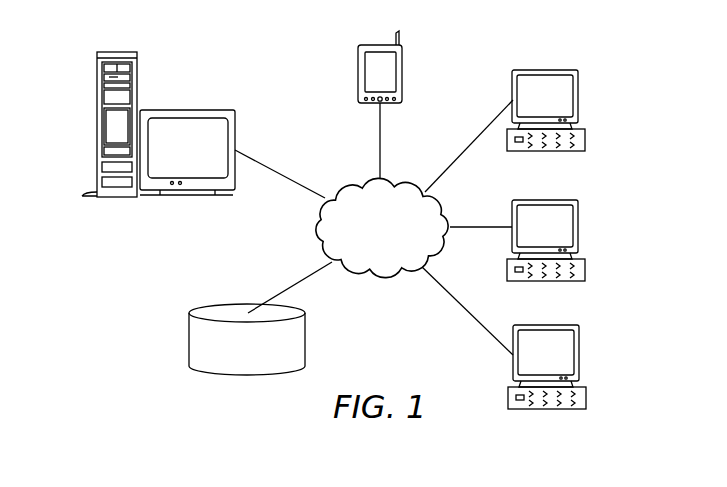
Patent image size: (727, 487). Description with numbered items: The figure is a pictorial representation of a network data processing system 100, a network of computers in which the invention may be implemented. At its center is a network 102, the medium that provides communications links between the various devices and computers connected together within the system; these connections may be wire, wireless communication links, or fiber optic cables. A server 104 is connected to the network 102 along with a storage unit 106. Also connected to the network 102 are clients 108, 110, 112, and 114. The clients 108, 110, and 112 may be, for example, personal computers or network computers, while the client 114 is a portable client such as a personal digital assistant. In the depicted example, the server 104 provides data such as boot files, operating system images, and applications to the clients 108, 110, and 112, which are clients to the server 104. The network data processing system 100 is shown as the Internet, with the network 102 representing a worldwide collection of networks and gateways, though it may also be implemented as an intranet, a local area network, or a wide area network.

The network data processing system 100 is at (455, 68).
The network 102 is at (353, 183).
The server 104 is at (97, 125).
The storage unit 106 is at (189, 340).
The client 108 is at (578, 97).
The client 110 is at (578, 227).
The client 112 is at (579, 355).
The portable client 114 is at (358, 73).